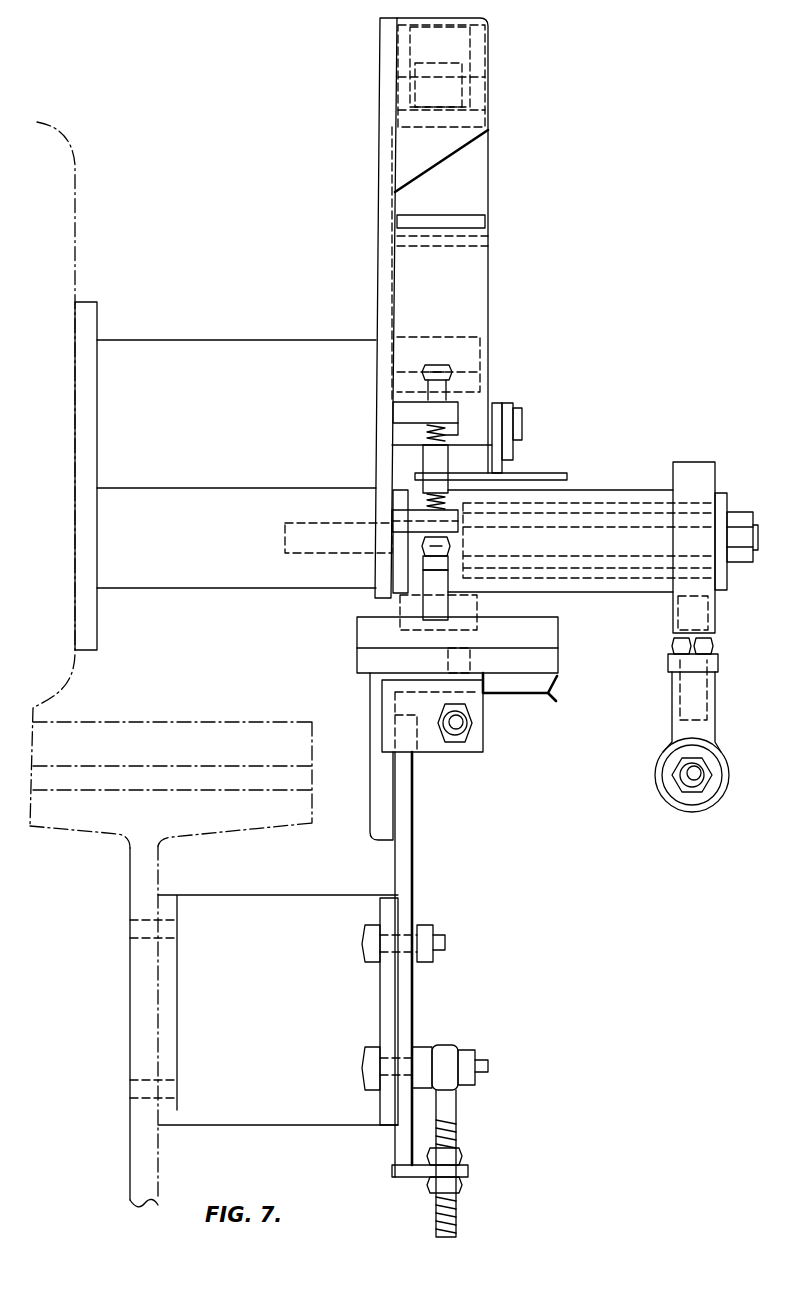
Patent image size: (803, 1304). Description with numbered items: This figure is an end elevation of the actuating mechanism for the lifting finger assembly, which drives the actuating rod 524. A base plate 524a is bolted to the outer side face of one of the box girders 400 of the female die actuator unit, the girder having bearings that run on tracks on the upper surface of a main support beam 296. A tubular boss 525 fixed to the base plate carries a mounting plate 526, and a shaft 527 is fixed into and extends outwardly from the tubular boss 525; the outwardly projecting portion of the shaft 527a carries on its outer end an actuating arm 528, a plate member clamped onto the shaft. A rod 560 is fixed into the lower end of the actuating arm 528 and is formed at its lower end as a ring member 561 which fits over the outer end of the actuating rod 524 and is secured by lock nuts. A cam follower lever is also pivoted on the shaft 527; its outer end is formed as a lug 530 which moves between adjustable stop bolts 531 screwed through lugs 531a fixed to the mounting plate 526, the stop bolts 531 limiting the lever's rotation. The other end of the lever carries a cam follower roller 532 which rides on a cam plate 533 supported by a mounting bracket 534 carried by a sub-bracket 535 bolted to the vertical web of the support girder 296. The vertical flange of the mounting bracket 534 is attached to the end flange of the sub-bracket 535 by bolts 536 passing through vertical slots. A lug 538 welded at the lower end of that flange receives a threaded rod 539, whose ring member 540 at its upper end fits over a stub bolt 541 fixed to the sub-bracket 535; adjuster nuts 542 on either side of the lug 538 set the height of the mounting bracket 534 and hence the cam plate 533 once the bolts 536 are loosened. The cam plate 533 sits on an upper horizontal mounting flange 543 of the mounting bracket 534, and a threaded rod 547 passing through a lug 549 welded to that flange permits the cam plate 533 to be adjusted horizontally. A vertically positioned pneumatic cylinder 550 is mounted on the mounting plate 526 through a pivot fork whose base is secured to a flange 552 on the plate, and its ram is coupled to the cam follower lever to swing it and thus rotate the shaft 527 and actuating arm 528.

The box girder 400 is at (75, 253).
The main support beam 296 is at (140, 1013).
The base plate 524a is at (85, 320).
The tubular boss 525 is at (210, 352).
The mounting plate 526 is at (381, 288).
The pneumatic cylinder 550 is at (470, 200).
The flange 552 is at (440, 150).
The adjustable stop bolt 531 is at (445, 380).
The lug 531a is at (395, 410).
The lug 530 is at (398, 453).
The shaft 527 is at (300, 523).
The rod sleeve 527a is at (608, 492).
The actuating arm 528 is at (690, 470).
The rod 560 is at (672, 640).
The ring member 561 is at (712, 805).
The actuating rod 524 is at (687, 777).
The cam follower roller 532 is at (470, 606).
The cam plate 533 is at (556, 663).
The mounting flange 543 is at (535, 697).
The lug 549 is at (472, 750).
The threaded rod 547 is at (462, 728).
The mounting bracket 534 is at (405, 878).
The sub-bracket 535 is at (315, 1095).
The bolt 536 is at (445, 945).
The ring member 540 is at (448, 1045).
The stub bolt 541 is at (488, 1068).
The threaded rod 539 is at (458, 1220).
The lug 538 is at (470, 1172).
The adjuster nut 542 is at (462, 1155).